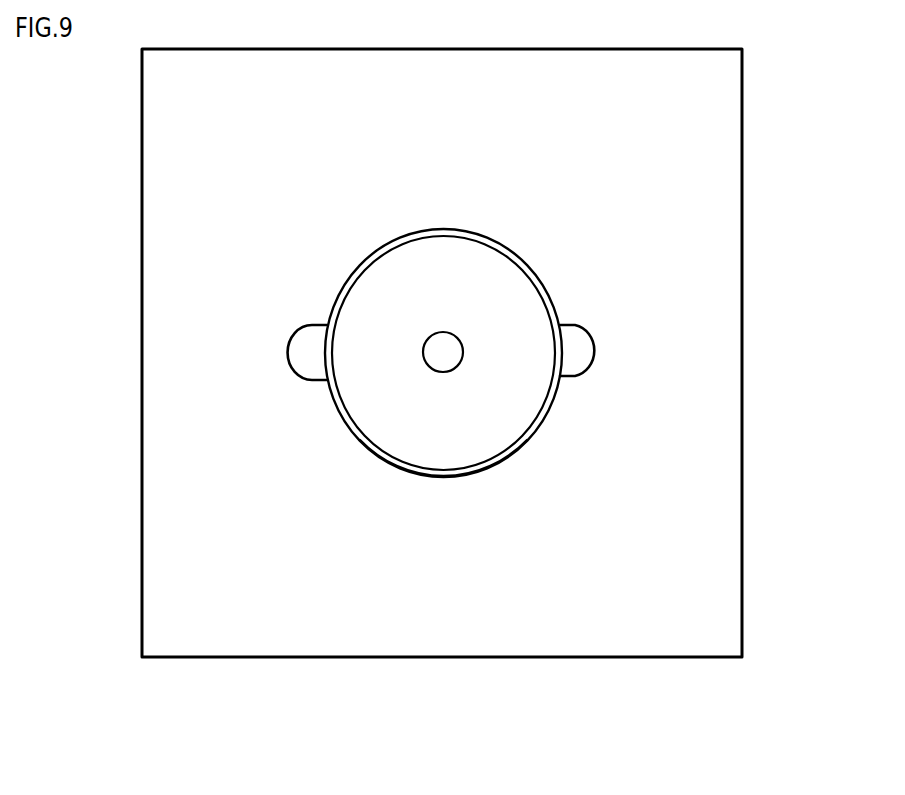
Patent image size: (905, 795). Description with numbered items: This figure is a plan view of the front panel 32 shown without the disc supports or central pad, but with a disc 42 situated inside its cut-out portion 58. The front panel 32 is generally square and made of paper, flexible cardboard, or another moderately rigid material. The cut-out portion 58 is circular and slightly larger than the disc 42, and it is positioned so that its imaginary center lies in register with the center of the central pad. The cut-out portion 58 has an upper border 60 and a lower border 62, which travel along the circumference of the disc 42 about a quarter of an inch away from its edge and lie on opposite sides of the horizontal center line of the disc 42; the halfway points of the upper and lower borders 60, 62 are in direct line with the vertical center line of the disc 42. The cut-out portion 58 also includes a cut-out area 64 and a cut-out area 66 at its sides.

The front panel 32 is at (713, 129).
The disc 42 is at (484, 388).
The cut-out portion 58 is at (348, 282).
The upper border 60 is at (518, 255).
The lower border 62 is at (510, 460).
The cut-out area 64 is at (297, 359).
The cut-out area 66 is at (588, 366).